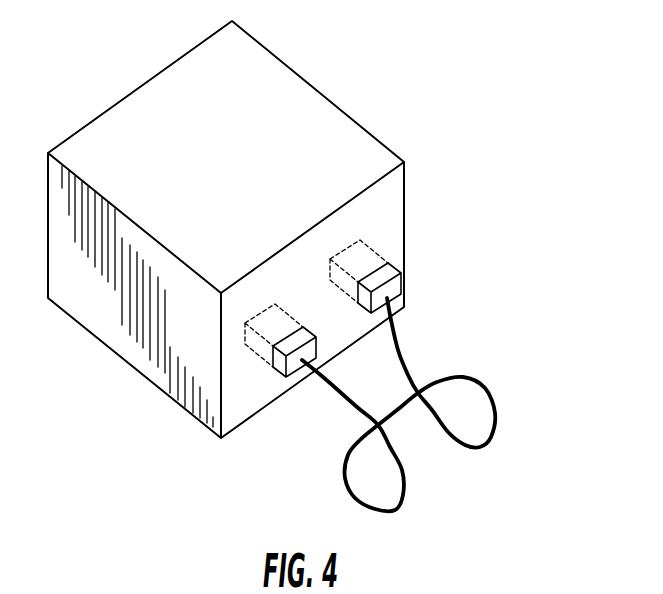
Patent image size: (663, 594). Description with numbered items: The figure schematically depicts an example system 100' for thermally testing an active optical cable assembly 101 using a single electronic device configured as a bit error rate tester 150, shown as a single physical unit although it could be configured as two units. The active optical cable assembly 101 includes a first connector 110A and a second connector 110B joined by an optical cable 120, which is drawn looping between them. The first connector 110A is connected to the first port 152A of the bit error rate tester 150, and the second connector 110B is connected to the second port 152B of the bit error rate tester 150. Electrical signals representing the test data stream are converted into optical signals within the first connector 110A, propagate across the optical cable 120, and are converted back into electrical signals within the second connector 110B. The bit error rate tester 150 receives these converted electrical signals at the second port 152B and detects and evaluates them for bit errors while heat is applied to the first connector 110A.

The system 100' is at (301, 266).
The bit error rate tester 150 is at (361, 93).
The first port 152A is at (240, 332).
The second port 152B is at (381, 249).
The active optical cable assembly 101 is at (444, 357).
The first connector 110A is at (290, 382).
The second connector 110B is at (404, 297).
The optical cable 120 is at (491, 448).